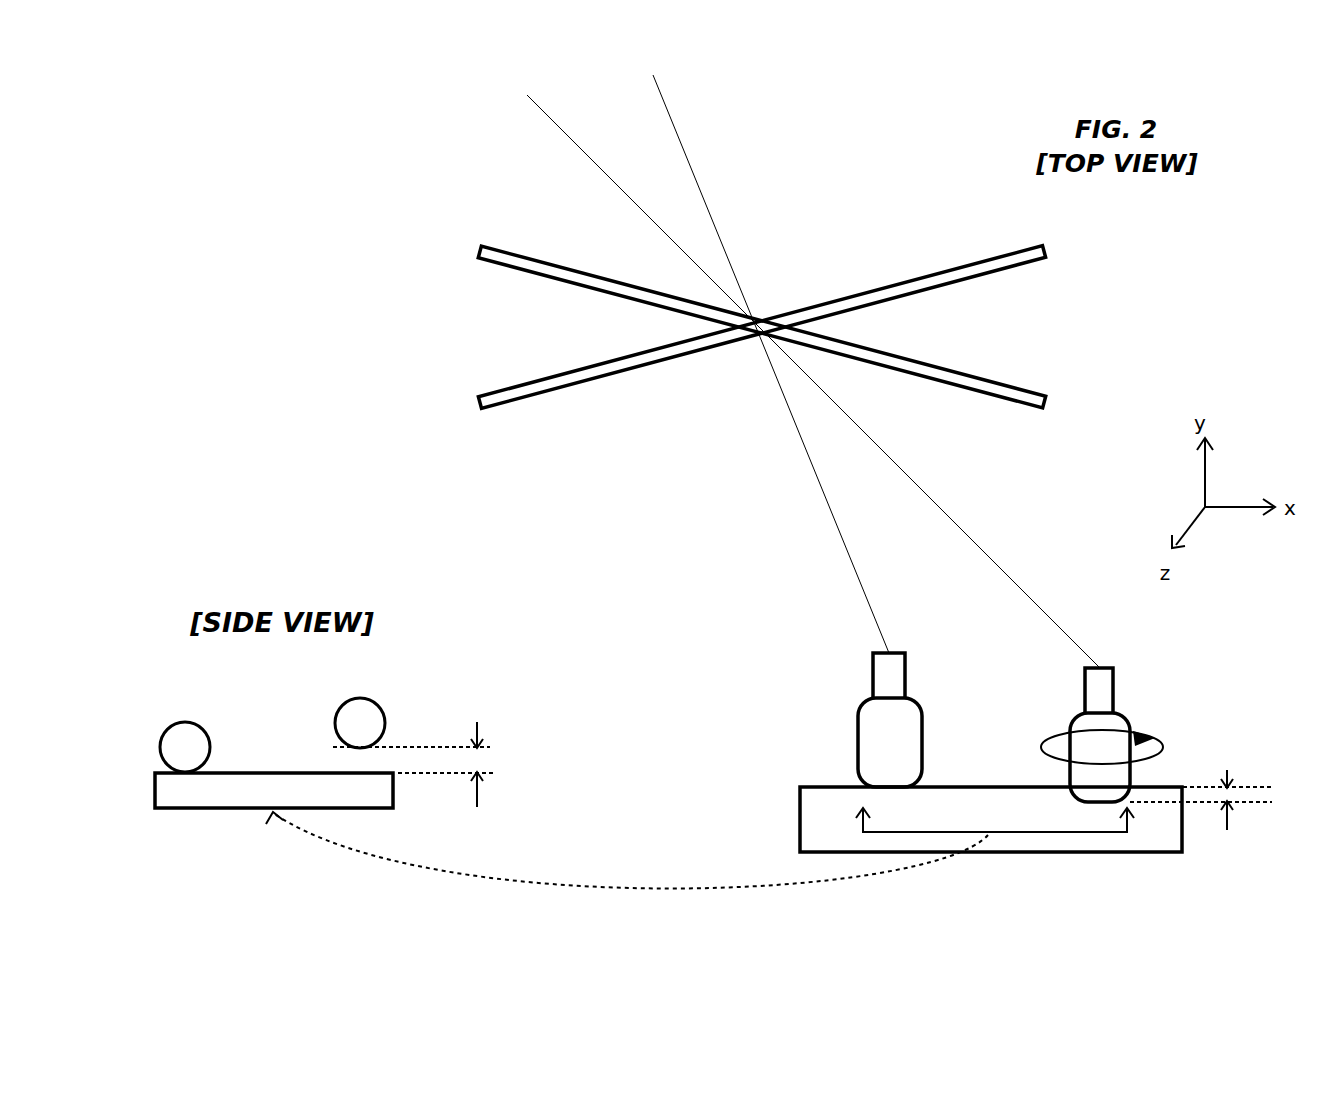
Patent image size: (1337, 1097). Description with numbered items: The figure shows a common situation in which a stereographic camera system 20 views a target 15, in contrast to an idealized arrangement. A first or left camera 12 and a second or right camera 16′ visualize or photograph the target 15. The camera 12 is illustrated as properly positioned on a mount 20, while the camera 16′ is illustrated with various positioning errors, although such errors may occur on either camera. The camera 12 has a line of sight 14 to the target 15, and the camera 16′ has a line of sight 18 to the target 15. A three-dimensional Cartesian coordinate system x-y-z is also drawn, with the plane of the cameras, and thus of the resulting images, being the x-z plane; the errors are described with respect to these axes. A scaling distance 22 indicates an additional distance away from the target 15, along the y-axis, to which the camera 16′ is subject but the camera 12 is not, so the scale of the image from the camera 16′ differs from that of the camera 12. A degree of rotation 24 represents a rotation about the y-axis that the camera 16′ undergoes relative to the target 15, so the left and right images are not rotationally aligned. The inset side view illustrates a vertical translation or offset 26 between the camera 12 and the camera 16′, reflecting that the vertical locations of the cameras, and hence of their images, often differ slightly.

The first or left camera 12 is at (920, 702).
The line of sight 14 is at (870, 597).
The target 15 is at (988, 376).
The second or right camera 16′ is at (1128, 712).
The line of sight 18 is at (1005, 573).
The mount 20 is at (806, 642).
The scaling distance 22 is at (1240, 797).
The degree of rotation 24 is at (1165, 759).
The vertical translation or offset 26 is at (484, 762).